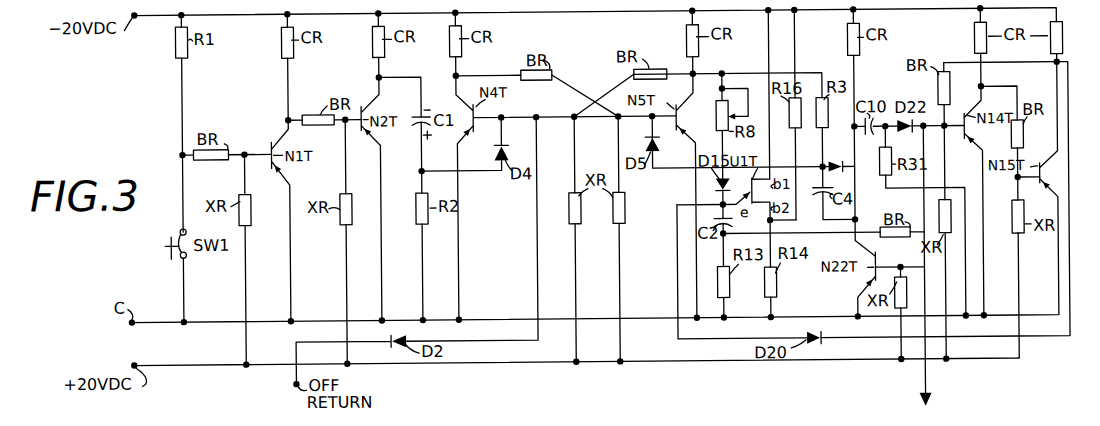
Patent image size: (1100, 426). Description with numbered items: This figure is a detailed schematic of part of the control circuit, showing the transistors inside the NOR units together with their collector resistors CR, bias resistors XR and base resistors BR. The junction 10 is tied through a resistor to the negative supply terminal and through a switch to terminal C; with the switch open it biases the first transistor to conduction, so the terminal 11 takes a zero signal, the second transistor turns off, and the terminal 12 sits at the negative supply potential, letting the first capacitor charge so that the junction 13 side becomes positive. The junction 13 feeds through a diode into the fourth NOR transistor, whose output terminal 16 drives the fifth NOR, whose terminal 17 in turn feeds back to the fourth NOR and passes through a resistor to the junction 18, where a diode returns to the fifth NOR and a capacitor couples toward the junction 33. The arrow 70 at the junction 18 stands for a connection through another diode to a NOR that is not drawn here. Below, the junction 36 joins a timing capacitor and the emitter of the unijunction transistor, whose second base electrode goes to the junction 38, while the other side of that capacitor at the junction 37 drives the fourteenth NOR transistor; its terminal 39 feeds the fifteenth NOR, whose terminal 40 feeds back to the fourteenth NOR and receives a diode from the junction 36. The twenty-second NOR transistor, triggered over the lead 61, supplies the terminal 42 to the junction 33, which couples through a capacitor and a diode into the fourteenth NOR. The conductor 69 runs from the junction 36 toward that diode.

The junction 10 is at (181, 152).
The terminal 11 is at (290, 117).
The terminal 12 is at (383, 77).
The junction 13 is at (420, 170).
The output terminal 16 is at (459, 76).
The terminal 17 is at (692, 73).
The junction 18 is at (826, 167).
The junction 33 is at (886, 126).
The junction 36 is at (721, 206).
The junction 37 is at (723, 246).
The junction 38 is at (774, 230).
The terminal 39 is at (984, 89).
The terminal 40 is at (1055, 68).
The terminal 42 is at (858, 220).
The lead 61 is at (927, 384).
The conductor from node 36 to diode D20 69 is at (677, 340).
The arrow 70 is at (846, 172).